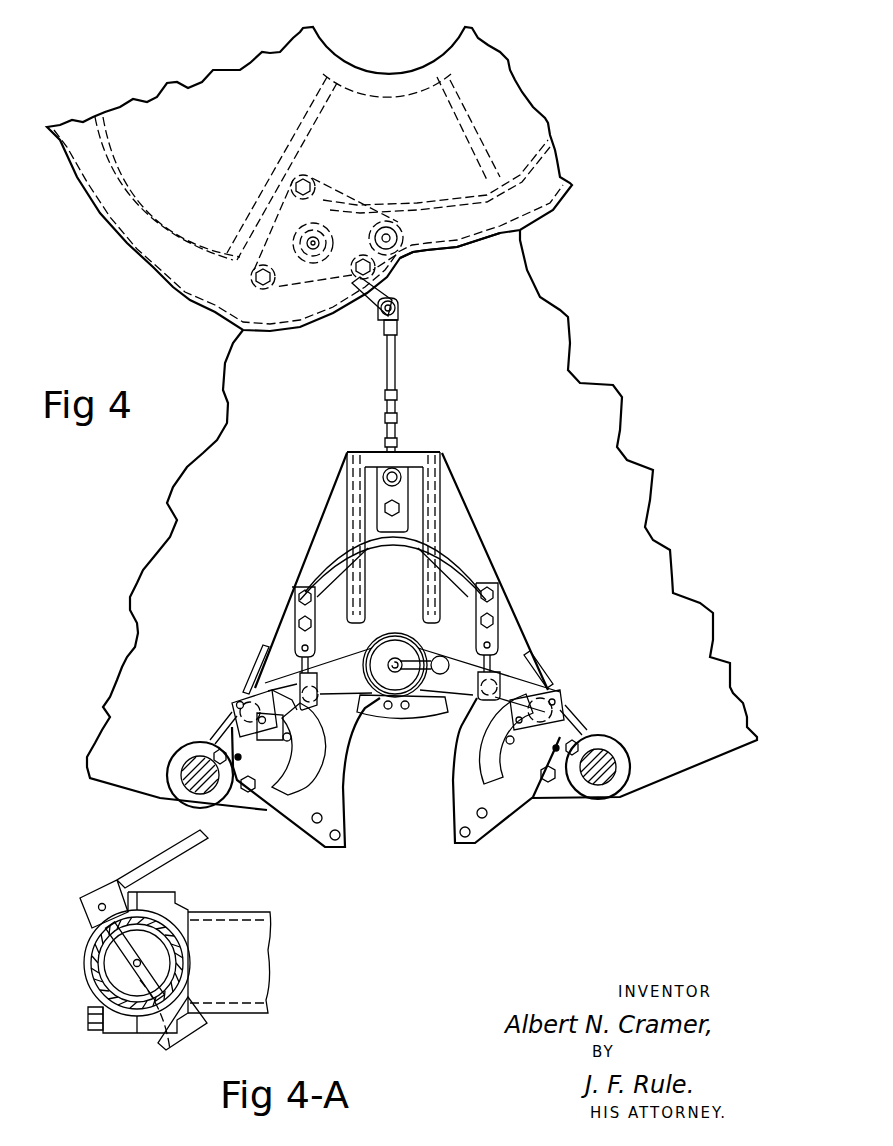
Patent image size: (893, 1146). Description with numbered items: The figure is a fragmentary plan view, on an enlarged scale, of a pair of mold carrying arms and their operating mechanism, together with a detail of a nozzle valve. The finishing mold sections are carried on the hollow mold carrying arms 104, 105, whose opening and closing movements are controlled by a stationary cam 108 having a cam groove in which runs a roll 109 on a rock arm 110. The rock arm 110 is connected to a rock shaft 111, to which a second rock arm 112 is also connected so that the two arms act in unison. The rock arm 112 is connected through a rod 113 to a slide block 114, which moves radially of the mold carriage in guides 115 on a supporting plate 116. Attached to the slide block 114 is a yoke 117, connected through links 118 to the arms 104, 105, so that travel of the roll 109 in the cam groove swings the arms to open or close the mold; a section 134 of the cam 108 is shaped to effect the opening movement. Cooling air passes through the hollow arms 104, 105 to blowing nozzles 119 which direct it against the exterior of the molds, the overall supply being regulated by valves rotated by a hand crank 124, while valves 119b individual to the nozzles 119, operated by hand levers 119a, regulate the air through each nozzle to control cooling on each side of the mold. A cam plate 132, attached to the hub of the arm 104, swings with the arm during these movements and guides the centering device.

In FIG. 4, the mold carrying arm 104 is at (458, 660).
In FIG. 4, the mold carrying arm 105 is at (358, 652).
In FIG. 4, the stationary cam 108 is at (533, 132).
In FIG. 4, the roll 109 is at (400, 230).
In FIG. 4, the rock arm 110 is at (360, 208).
In FIG. 4, the rock shaft 111 is at (300, 240).
In FIG. 4, the rock arm 112 is at (368, 300).
In FIG. 4, the rod 113 is at (400, 360).
In FIG. 4, the slide block 114 is at (402, 547).
In FIG. 4, the guides 115 is at (440, 570).
In FIG. 4, the supporting plate 116 is at (515, 632).
In FIG. 4, the yoke 117 is at (450, 522).
In FIG. 4, the links 118 is at (303, 668).
In FIG. 4, the blowing nozzle 119 is at (257, 750).
In FIG. 4A, the blowing nozzle 119 is at (185, 1037).
In FIG. 4, the hand lever 119a is at (217, 730).
In FIG. 4A, the hand lever 119a is at (152, 865).
In FIG. 4A, the valve 119b is at (115, 977).
In FIG. 4, the hand crank 124 is at (425, 695).
In FIG. 4, the cam plate 132 is at (405, 722).
In FIG. 4, the cam section 134 is at (436, 245).